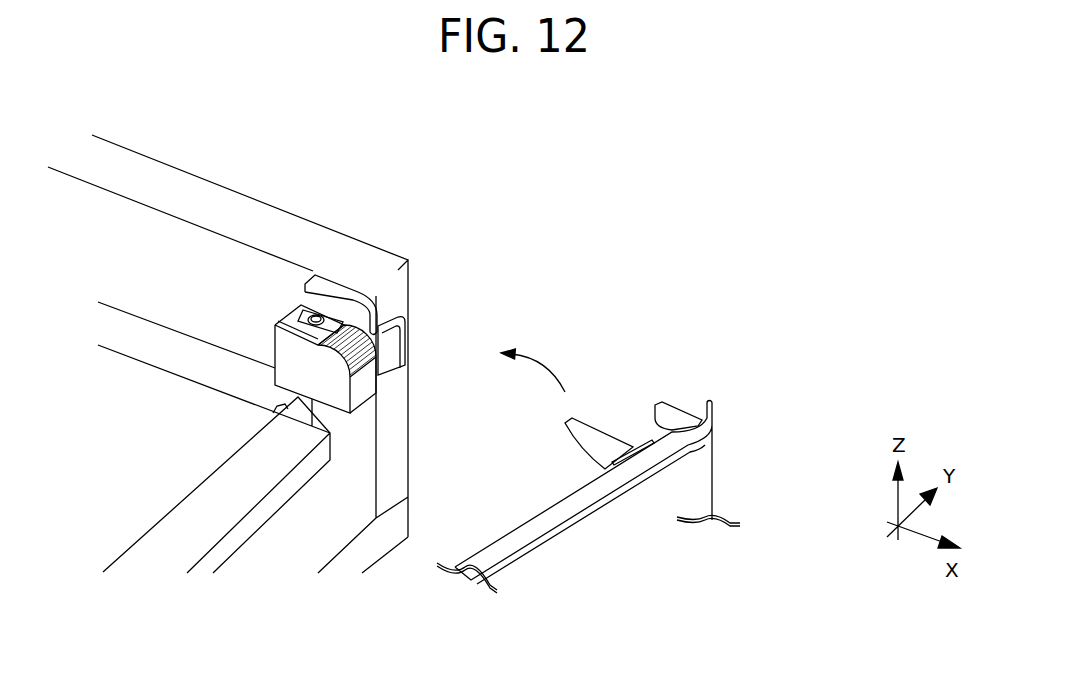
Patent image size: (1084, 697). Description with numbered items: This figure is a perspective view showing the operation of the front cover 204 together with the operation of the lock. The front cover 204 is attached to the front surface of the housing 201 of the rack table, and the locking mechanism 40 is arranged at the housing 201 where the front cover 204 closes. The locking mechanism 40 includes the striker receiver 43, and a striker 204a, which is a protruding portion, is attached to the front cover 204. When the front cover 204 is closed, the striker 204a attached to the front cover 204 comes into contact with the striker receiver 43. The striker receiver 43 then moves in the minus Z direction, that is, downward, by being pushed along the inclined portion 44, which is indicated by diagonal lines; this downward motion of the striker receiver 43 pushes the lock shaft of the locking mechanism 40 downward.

The housing 201 is at (228, 187).
The locking mechanism 40 is at (260, 308).
The striker receiver 43 is at (368, 297).
The inclined portion 44 is at (396, 320).
The front cover 204 is at (712, 467).
The striker 204a is at (590, 430).